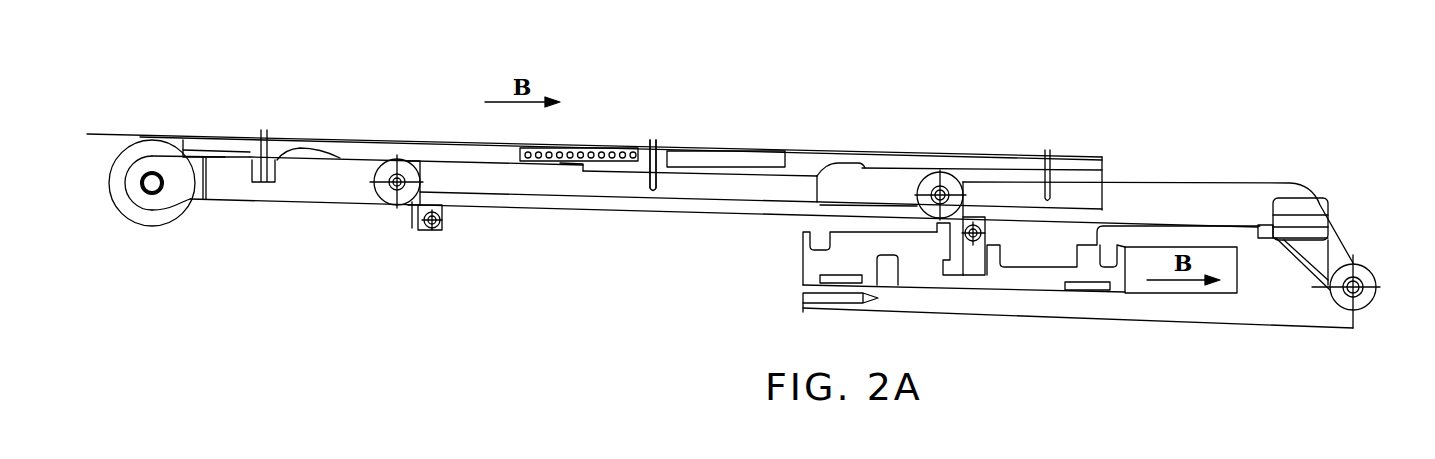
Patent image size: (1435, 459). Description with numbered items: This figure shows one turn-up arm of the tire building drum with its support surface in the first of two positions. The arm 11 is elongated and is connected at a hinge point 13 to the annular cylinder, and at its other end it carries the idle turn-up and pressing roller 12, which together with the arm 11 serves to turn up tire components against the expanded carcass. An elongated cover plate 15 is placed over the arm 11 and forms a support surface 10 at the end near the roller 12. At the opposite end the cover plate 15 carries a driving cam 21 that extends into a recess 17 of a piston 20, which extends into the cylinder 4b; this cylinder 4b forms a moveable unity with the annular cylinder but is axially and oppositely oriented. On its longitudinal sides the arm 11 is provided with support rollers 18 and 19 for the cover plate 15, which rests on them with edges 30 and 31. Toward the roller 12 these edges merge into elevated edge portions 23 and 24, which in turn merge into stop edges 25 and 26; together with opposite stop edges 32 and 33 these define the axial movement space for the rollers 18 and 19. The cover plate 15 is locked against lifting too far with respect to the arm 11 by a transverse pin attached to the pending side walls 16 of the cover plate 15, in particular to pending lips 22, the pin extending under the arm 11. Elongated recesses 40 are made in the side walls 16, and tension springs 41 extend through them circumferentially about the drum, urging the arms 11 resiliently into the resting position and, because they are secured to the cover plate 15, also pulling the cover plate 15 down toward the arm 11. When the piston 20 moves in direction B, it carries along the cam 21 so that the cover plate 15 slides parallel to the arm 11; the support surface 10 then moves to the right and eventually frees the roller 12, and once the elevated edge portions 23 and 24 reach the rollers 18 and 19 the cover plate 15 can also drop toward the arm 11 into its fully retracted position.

The support surface 10 is at (102, 134).
The turn-up arm 11 is at (342, 190).
The turn-up and pressing roller 12 is at (160, 212).
The hinge point 13 is at (1365, 275).
The cover plate 15 is at (371, 143).
The side wall 16 is at (600, 188).
The recess 17 is at (947, 260).
The support roller 18 is at (842, 205).
The support roller 19 is at (387, 197).
The piston 20 is at (1043, 278).
The driving cam 21 is at (968, 267).
The pending lip 22 is at (442, 198).
The elevated edge portion 23 is at (843, 170).
The elevated edge portion 24 is at (294, 156).
The stop edge 25 is at (817, 187).
The stop edge 26 is at (273, 188).
The edge 30 is at (915, 200).
The edge 31 is at (400, 142).
The stop edge 32 is at (967, 220).
The stop edge 33 is at (417, 198).
The elongated recess 40 is at (625, 148).
The tension spring 41 is at (577, 149).
The cylinder 4b is at (1217, 310).